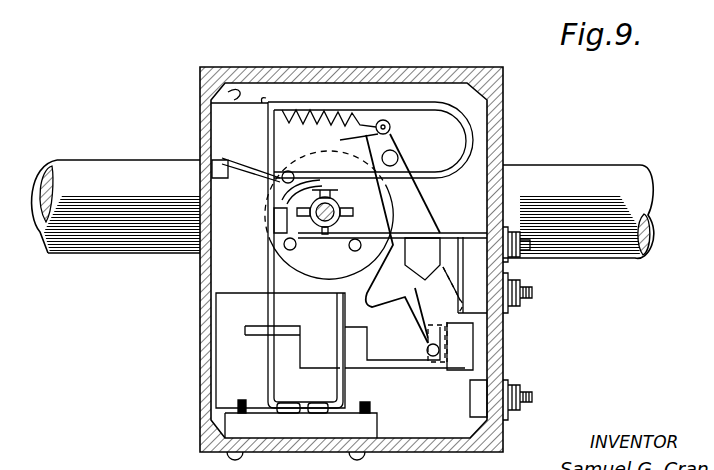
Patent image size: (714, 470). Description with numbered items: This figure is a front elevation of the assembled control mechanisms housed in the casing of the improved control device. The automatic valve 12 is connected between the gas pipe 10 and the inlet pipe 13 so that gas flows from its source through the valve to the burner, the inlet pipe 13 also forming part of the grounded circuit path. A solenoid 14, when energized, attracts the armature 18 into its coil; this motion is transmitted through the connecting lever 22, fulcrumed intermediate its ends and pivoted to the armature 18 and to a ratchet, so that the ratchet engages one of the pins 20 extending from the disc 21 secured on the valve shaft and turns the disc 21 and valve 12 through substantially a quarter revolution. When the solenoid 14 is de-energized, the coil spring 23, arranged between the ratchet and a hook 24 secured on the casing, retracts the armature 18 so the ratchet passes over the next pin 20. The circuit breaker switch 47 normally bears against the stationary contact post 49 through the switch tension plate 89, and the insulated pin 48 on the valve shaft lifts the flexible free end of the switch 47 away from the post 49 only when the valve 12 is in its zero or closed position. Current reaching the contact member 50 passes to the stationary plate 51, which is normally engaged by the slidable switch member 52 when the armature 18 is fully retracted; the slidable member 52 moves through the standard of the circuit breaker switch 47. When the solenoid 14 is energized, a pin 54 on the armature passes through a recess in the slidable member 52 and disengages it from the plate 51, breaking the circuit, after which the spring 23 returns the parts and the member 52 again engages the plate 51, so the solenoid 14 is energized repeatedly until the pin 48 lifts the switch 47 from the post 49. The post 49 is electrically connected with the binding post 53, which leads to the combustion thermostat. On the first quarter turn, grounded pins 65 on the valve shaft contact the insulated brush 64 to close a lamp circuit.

The gas pipe 10 is at (116, 172).
The inlet pipe 13 is at (592, 175).
The solenoid 14 is at (225, 340).
The automatic valve 12 is at (350, 212).
The armature 18 is at (383, 338).
The pins 20 is at (290, 251).
The disc 21 is at (383, 252).
The connecting lever 22 is at (420, 222).
The coil spring 23 is at (262, 102).
The hook 24 is at (225, 105).
The circuit breaker switch 47 is at (428, 107).
The insulated pin 48 is at (331, 200).
The stationary contact post 49 is at (281, 220).
The contact member 50 is at (528, 298).
The stationary plate 51 is at (467, 318).
The slidable switch member 52 is at (416, 372).
The binding post 53 is at (522, 412).
The pin 54 is at (427, 345).
The insulated brush 64 is at (446, 236).
The pins 65 is at (338, 230).
The switch tension plate 89 is at (232, 186).